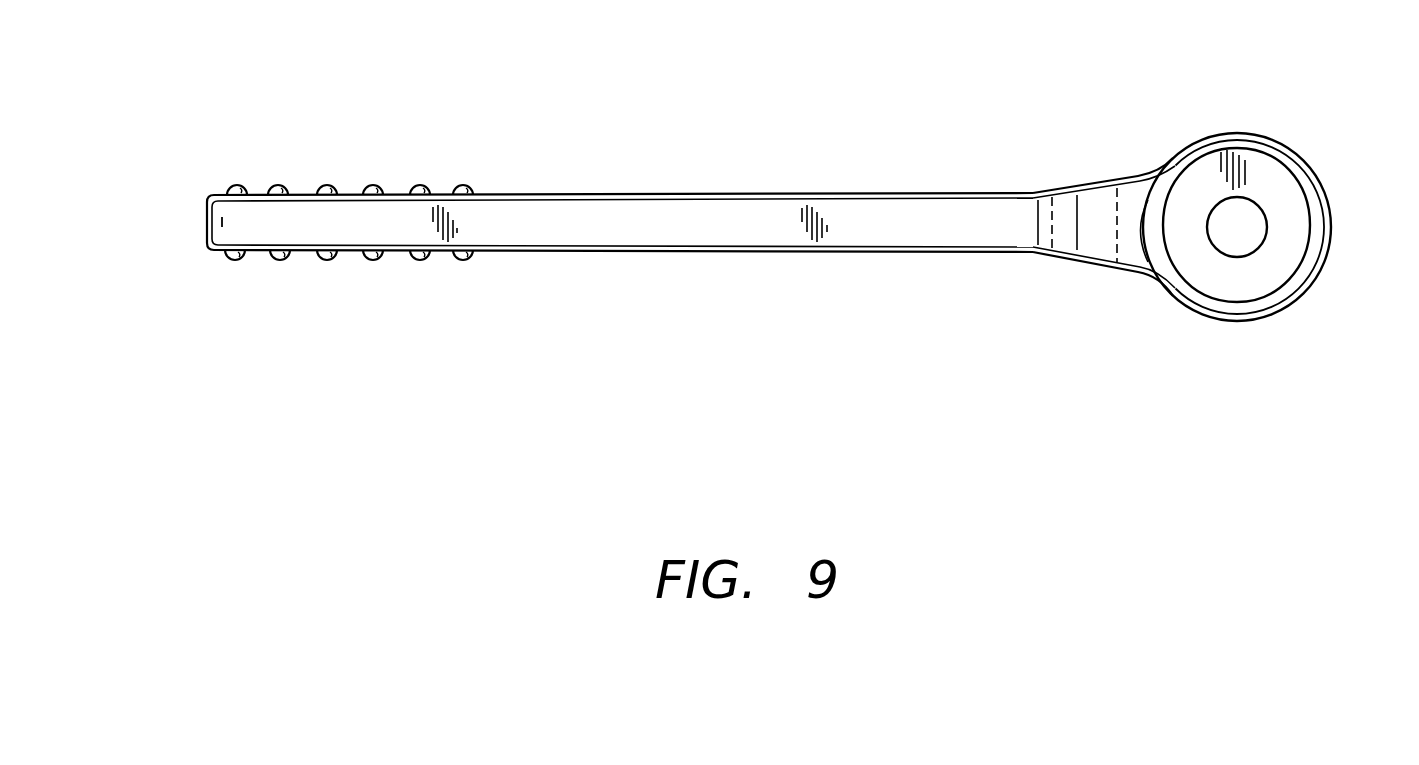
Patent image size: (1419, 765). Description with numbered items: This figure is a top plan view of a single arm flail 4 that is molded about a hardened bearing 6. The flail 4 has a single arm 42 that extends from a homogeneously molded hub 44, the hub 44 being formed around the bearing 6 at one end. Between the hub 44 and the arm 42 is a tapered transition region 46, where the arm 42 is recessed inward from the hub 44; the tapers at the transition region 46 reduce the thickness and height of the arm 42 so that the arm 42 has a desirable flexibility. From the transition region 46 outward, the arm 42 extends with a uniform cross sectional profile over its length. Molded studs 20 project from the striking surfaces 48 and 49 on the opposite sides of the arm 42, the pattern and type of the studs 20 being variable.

The tool assembly 4 is at (907, 82).
The hardened bearing 6 is at (1266, 169).
The molded studs 20 is at (323, 183).
The single arm 42 is at (778, 253).
The homogeneously molded hub 44 is at (1333, 225).
The tapered transition region 46 is at (1117, 265).
The striking surface 48 is at (214, 196).
The striking surface 49 is at (215, 251).